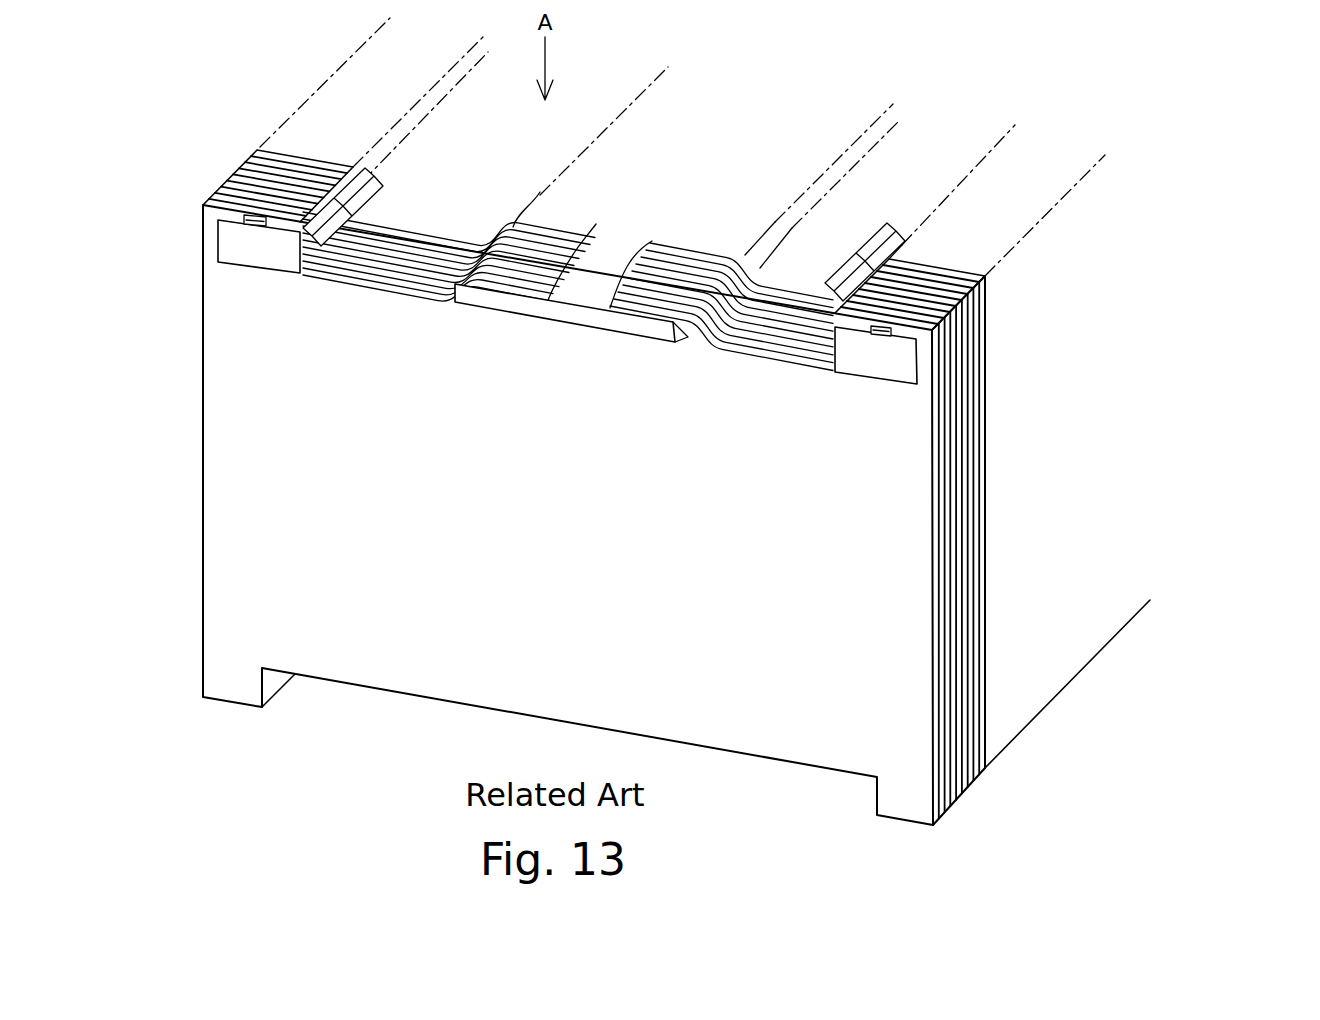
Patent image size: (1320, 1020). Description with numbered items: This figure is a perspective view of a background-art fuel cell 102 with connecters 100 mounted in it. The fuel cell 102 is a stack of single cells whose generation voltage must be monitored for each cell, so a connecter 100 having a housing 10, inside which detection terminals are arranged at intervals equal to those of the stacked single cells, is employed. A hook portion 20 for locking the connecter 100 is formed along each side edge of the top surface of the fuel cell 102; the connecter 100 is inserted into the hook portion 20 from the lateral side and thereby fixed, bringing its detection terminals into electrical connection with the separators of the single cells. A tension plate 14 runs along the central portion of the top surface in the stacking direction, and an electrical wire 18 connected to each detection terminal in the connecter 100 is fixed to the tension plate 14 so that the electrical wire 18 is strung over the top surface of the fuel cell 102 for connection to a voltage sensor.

The housing 10 is at (233, 245).
The tension plate 14 is at (510, 305).
The electrical wire 18 is at (431, 223).
The hook portion 20 is at (248, 222).
The connecter 100 is at (272, 255).
The fuel cell 102 is at (1105, 449).